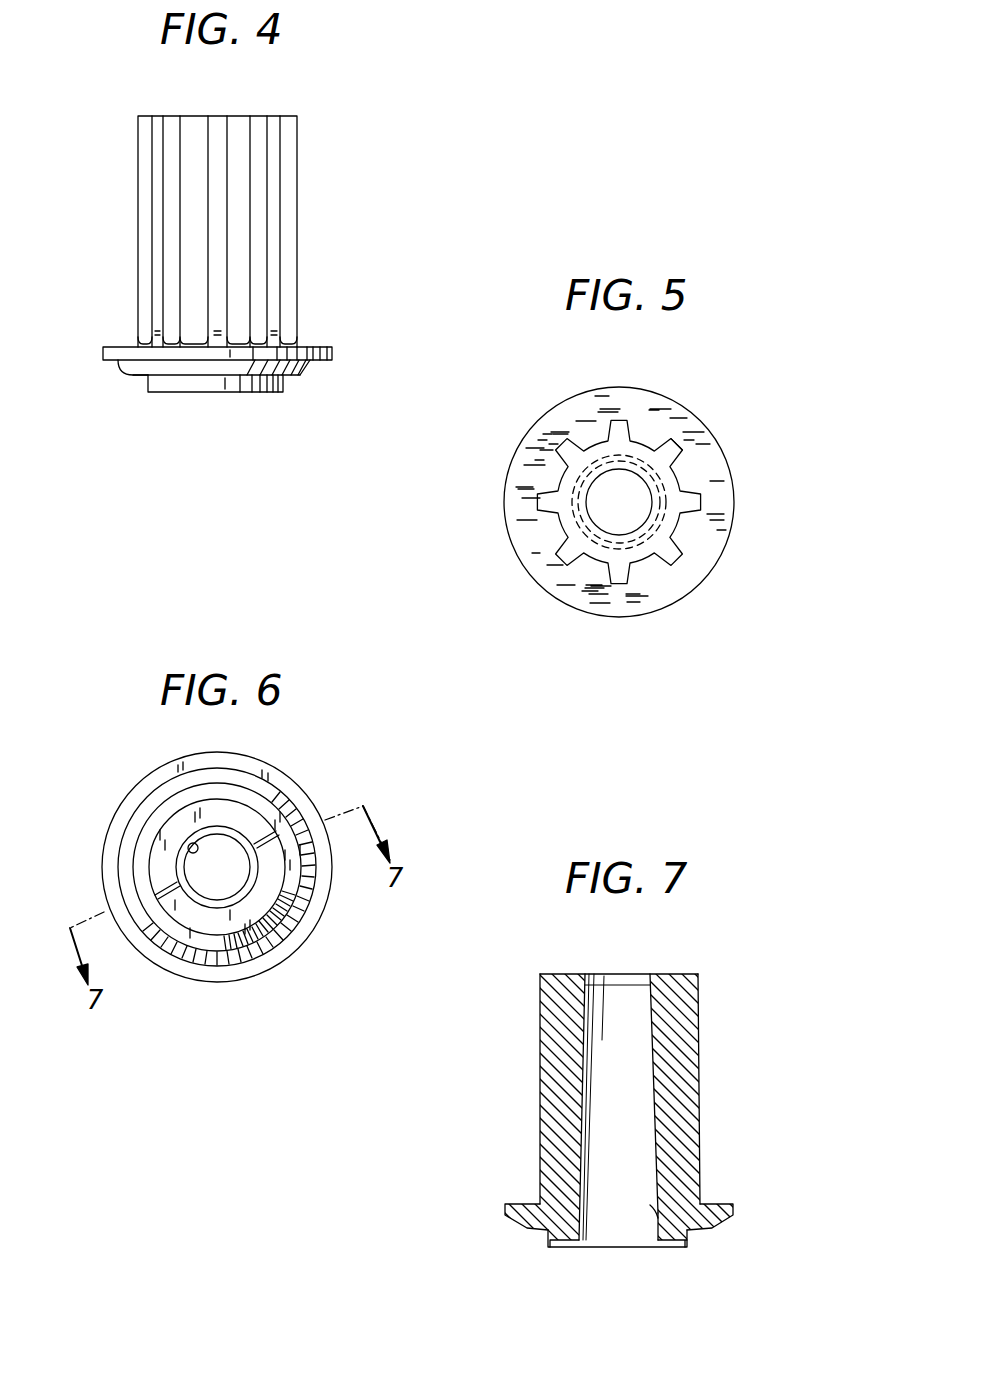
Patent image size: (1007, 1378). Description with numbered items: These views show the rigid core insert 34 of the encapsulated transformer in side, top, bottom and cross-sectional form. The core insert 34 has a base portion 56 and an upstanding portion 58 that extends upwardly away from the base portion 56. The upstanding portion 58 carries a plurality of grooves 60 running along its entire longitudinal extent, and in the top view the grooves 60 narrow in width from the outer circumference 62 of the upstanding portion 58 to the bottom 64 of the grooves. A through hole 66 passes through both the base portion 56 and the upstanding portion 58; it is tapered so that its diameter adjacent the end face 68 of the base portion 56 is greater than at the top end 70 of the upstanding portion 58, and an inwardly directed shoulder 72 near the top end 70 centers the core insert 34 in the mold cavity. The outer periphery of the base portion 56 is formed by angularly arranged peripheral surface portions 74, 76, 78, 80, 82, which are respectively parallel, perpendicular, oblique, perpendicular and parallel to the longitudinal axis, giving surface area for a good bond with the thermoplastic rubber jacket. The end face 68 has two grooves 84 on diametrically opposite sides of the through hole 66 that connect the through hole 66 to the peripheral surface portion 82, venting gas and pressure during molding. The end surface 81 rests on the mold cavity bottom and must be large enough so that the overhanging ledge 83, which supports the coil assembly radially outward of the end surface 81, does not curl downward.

In FIG. 4, the rigid core insert 34 is at (310, 163).
In FIG. 5, the rigid core insert 34 is at (745, 458).
In FIG. 6, the rigid core insert 34 is at (325, 782).
In FIG. 7, the rigid core insert 34 is at (712, 1023).
In FIG. 4, the base portion 56 is at (305, 368).
In FIG. 7, the base portion 56 is at (733, 1207).
In FIG. 4, the upstanding portion 58 is at (298, 260).
In FIG. 7, the upstanding portion 58 is at (700, 1120).
In FIG. 4, the grooves 60 is at (247, 130).
In FIG. 5, the grooves 60 is at (640, 438).
In FIG. 5, the outer circumference 62 is at (678, 442).
In FIG. 5, the bottom of the grooves 64 is at (560, 540).
In FIG. 5, the through hole 66 is at (590, 490).
In FIG. 6, the through hole 66 is at (193, 848).
In FIG. 7, the through hole 66 is at (658, 1213).
In FIG. 6, the end face 68 is at (275, 893).
In FIG. 7, the end face 68 is at (671, 1250).
In FIG. 7, the top end 70 is at (681, 974).
In FIG. 7, the inwardly directed shoulder 72 is at (592, 976).
In FIG. 4, the peripheral surface portion 74 is at (103, 353).
In FIG. 4, the peripheral surface portion 76 is at (113, 362).
In FIG. 6, the peripheral surface portion 76 is at (300, 926).
In FIG. 4, the peripheral surface portion 78 is at (123, 370).
In FIG. 6, the peripheral surface portion 78 is at (272, 950).
In FIG. 4, the peripheral surface portion 80 is at (131, 377).
In FIG. 6, the peripheral surface portion 80 is at (217, 946).
In FIG. 4, the end surface 81 is at (262, 394).
In FIG. 4, the peripheral surface portion 82 is at (149, 380).
In FIG. 7, the peripheral surface portion 82 is at (540, 1237).
In FIG. 4, the ledge 83 is at (312, 347).
In FIG. 6, the grooves 84 is at (262, 838).
In FIG. 7, the grooves 84 is at (557, 1248).